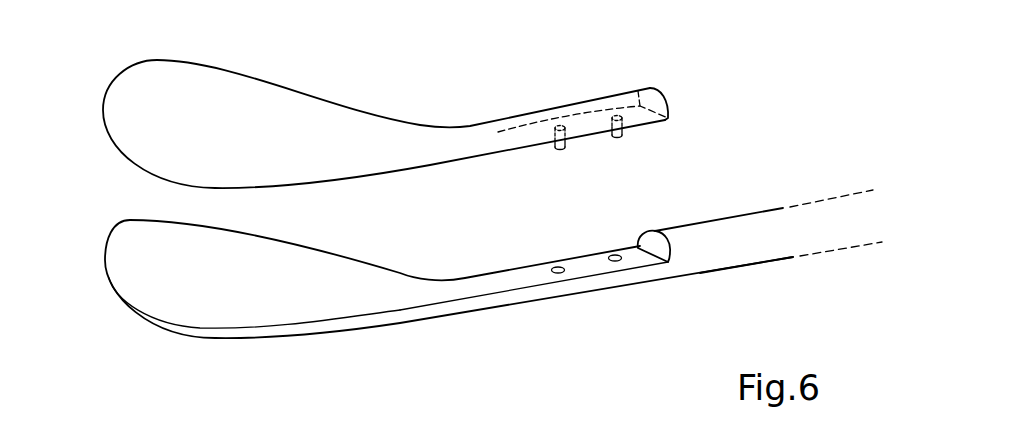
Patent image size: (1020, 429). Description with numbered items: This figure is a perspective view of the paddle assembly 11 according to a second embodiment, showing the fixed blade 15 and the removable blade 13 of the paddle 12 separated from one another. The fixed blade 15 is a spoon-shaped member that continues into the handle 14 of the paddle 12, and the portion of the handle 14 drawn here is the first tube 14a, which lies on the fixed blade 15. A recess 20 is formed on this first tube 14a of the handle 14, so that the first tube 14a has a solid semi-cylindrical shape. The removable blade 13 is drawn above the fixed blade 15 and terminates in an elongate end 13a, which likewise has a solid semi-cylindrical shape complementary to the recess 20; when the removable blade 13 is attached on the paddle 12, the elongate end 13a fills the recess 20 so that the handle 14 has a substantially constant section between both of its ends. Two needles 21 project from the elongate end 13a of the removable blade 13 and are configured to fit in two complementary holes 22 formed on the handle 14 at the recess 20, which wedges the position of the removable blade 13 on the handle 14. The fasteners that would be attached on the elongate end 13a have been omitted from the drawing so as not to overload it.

The paddle assembly 11 is at (475, 209).
The paddle 12 is at (790, 265).
The removable blade 13 is at (417, 95).
The elongate end 13a is at (597, 105).
The handle 14 is at (760, 234).
The first tube 14a is at (740, 258).
The fixed blade 15 is at (132, 257).
The recess 20 is at (430, 246).
The needles 21 is at (562, 148).
The holes 22 is at (614, 255).